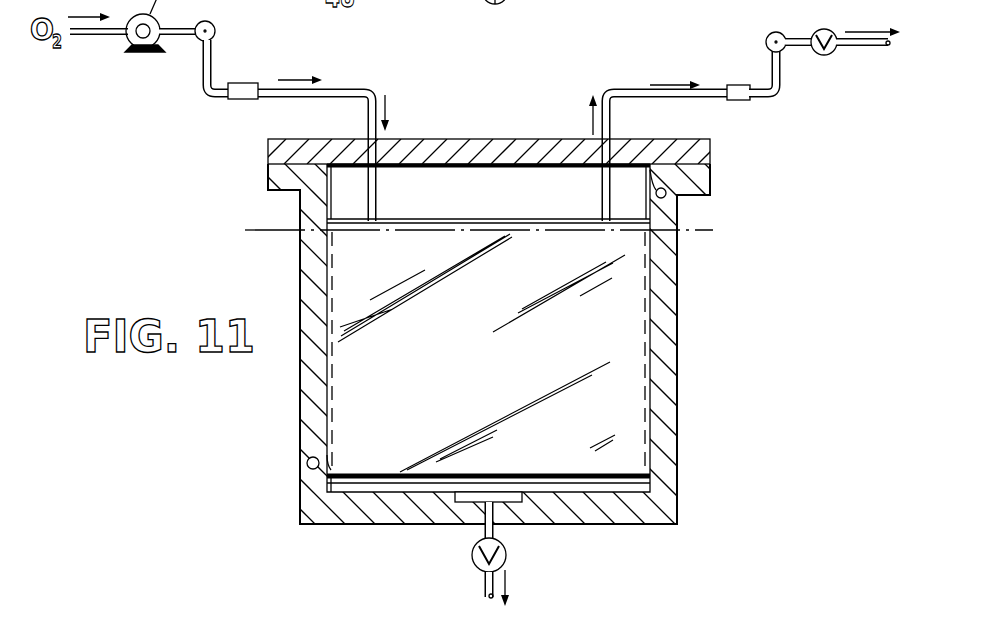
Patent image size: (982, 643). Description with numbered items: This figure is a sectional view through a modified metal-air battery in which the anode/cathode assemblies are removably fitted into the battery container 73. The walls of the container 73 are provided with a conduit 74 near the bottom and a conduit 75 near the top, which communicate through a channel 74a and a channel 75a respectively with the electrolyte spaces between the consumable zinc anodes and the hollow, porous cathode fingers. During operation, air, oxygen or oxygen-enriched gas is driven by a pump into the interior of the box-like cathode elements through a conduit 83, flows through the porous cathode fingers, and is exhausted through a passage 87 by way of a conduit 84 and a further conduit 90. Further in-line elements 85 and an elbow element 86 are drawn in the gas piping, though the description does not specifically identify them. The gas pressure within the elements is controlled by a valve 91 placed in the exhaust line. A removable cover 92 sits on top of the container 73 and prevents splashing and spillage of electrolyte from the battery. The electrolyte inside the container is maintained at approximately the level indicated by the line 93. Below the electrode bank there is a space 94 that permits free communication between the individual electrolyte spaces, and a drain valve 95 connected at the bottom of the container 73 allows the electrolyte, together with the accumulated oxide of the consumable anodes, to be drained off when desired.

The container 73 is at (679, 341).
The conduit 74 is at (307, 463).
The channel 74a is at (322, 455).
The conduit 75 is at (666, 199).
The channel 75a is at (648, 185).
The conduit 83 is at (375, 201).
The conduit 84 is at (213, 24).
The filter 85 is at (243, 82).
The inlet connecting pipe 86 is at (202, 74).
The passage 87 is at (771, 68).
The conduit 90 is at (777, 31).
The valve 91 is at (826, 55).
The removable cover 92 is at (528, 155).
The line 93 is at (283, 229).
The space 94 is at (598, 484).
The drain valve 95 is at (472, 559).